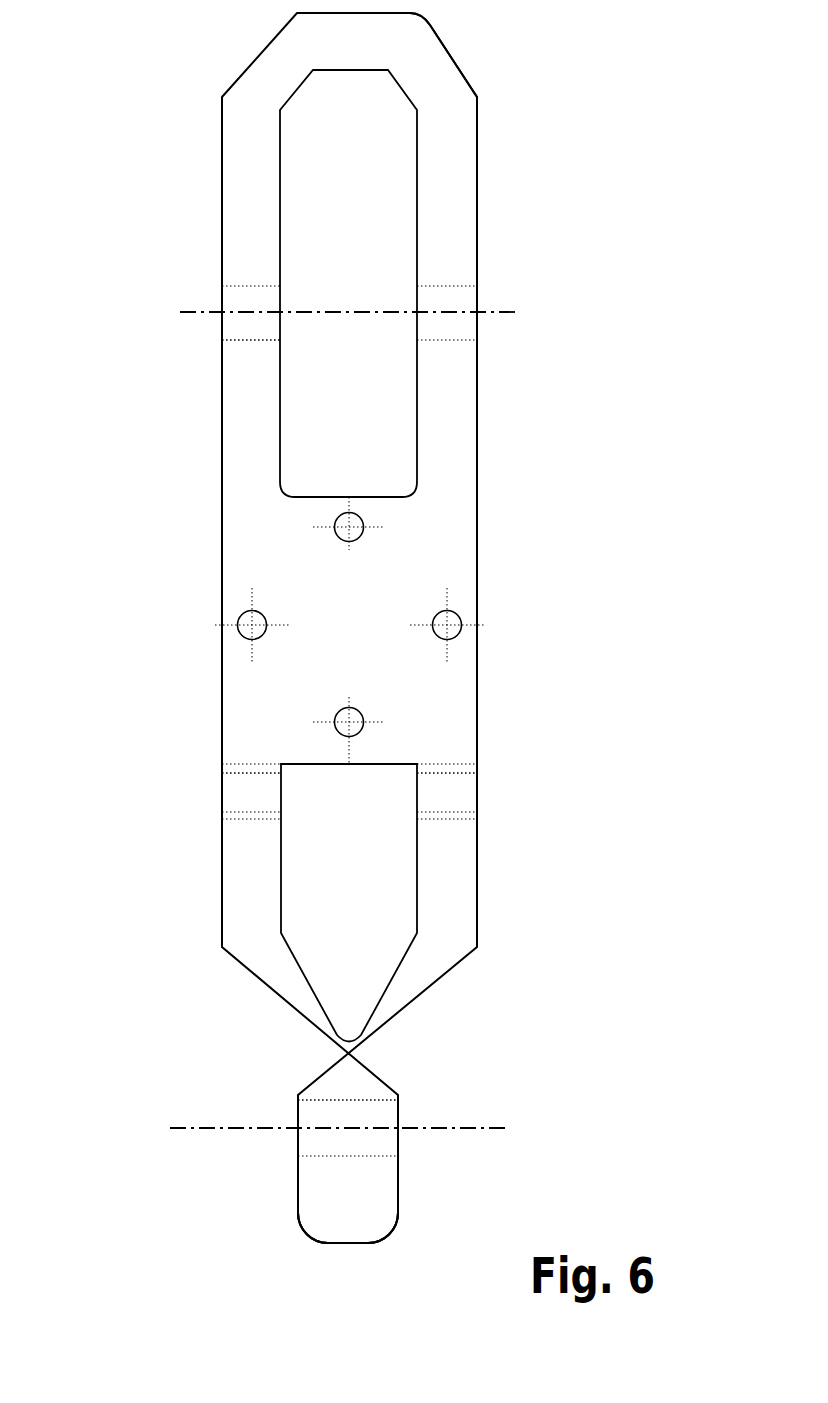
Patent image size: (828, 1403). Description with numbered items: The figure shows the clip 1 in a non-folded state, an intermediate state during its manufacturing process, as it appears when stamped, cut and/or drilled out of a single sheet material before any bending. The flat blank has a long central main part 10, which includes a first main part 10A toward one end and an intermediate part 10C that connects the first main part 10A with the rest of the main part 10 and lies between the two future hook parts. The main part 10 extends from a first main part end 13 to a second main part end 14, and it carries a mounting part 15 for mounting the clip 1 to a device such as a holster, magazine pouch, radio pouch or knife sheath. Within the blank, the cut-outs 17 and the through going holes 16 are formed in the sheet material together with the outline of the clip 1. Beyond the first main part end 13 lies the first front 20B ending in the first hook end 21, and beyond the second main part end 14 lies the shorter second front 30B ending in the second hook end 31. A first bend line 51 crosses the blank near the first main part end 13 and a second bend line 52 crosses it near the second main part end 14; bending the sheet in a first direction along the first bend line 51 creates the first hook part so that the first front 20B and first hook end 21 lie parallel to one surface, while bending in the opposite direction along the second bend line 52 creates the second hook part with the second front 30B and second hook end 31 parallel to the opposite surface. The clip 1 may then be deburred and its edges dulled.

The clip 1 is at (605, 118).
The main part 10 is at (180, 670).
The first main part 10A is at (222, 473).
The intermediate part 10C is at (232, 792).
The first main part end 13 is at (222, 342).
The second main part end 14 is at (387, 1100).
The mounting part 15 is at (421, 714).
The through going holes 16 is at (349, 555).
The cut-outs 17 is at (332, 257).
The first front 20B is at (467, 155).
The first hook end 21 is at (297, 13).
The second front 30B is at (388, 1182).
The second hook end 31 is at (352, 1245).
The first bend line 51 is at (500, 313).
The second bend line 52 is at (493, 1128).